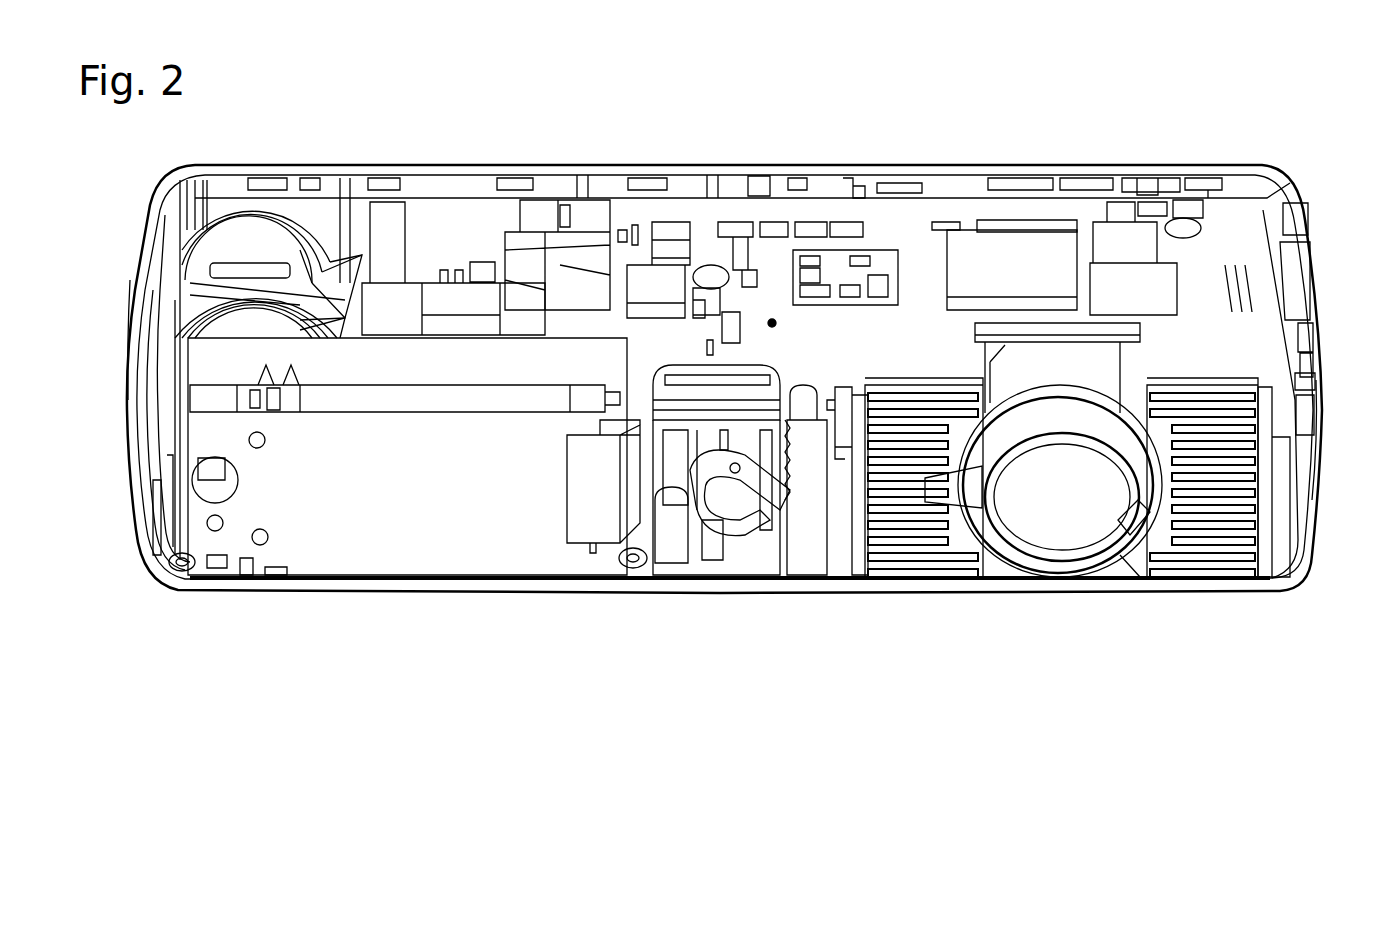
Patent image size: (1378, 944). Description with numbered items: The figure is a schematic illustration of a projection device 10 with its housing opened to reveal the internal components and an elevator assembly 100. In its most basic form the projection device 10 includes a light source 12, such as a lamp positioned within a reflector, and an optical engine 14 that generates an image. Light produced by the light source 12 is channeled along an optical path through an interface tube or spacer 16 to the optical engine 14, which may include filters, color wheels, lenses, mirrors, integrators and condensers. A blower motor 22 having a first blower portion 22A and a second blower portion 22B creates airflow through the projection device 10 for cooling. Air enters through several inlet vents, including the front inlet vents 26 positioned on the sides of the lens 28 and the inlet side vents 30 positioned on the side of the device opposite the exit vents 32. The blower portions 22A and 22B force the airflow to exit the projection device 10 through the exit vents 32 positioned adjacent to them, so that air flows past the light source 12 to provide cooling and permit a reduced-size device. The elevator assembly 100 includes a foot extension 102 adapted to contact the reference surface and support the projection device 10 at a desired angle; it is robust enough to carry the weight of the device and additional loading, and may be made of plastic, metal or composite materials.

The projection device 10 is at (1154, 112).
The light source 12 is at (492, 268).
The optical engine 14 is at (1190, 268).
The interface tube 16 is at (588, 297).
The blower motor 22 is at (197, 287).
The first blower portion 22A is at (253, 217).
The second blower portion 22B is at (170, 330).
The front inlet vents 26 is at (921, 543).
The lens 28 is at (1070, 397).
The inlet side vents 30 is at (1327, 408).
The exit vents 32 is at (128, 295).
The elevator assembly 100 is at (745, 520).
The foot extension 102 is at (827, 543).